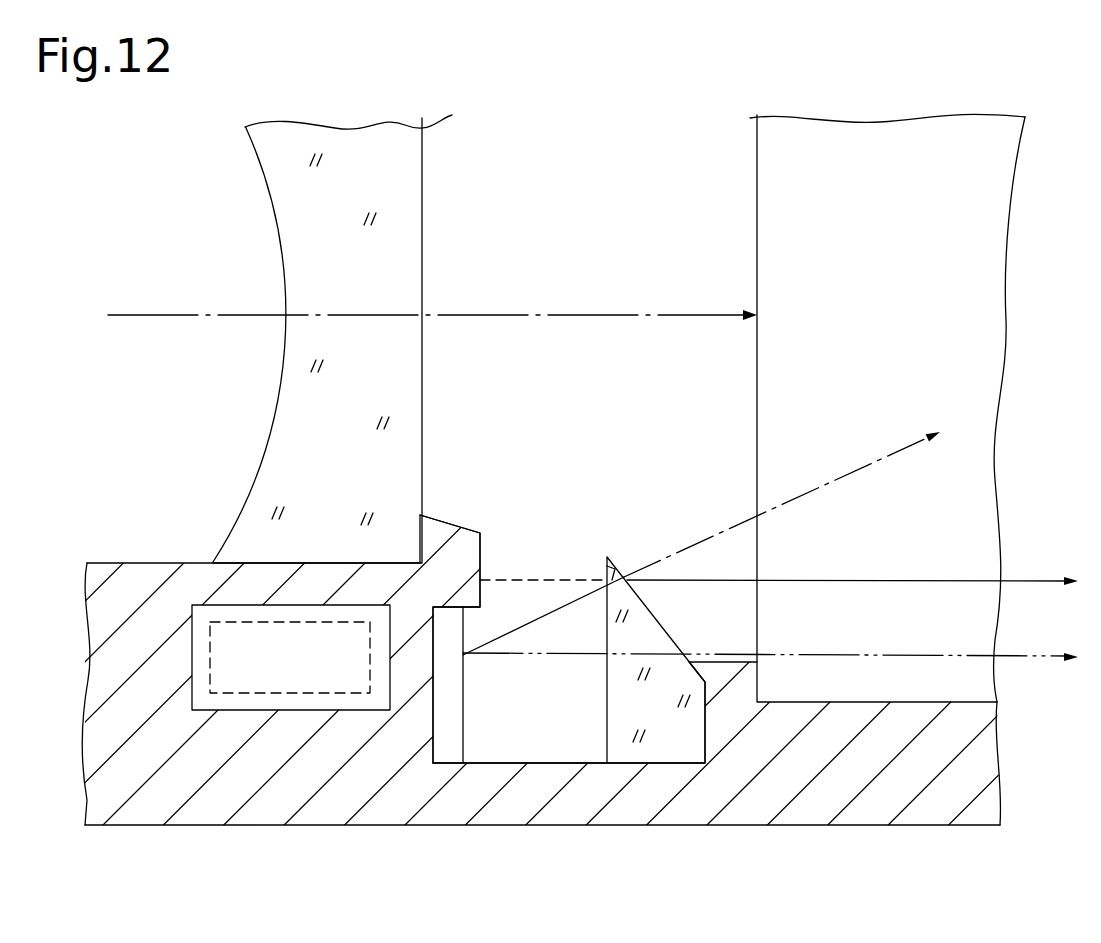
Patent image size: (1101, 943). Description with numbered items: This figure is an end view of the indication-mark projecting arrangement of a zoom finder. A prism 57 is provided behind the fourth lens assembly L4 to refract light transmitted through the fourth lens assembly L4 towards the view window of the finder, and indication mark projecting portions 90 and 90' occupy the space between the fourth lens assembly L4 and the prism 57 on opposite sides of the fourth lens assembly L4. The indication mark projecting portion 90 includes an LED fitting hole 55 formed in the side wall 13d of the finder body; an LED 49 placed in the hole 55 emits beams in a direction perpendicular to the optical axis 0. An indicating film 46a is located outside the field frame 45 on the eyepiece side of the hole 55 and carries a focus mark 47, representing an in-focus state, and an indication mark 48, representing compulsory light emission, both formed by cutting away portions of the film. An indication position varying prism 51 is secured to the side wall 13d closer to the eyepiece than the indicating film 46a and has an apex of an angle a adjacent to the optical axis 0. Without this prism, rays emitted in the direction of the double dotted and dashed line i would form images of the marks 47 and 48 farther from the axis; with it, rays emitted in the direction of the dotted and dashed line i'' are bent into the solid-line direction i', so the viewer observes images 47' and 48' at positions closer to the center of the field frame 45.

The side wall 13d is at (167, 830).
The indication mark projecting portion 90 is at (542, 876).
The indication mark projecting portion 90' is at (544, 66).
The fourth lens assembly L4 is at (276, 204).
The prism 57 is at (757, 436).
The indication position varying prism 51 is at (660, 750).
The field frame 45 is at (423, 517).
The indicating film 46a is at (453, 731).
The LED 49 is at (317, 673).
The LED fitting hole 55 is at (250, 694).
The focus mark 47 is at (543, 646).
The indication mark 48 is at (543, 646).
The indication mark image 47' is at (547, 535).
The indication mark image 48' is at (547, 535).
The apex angle a is at (622, 574).
The optical axis 0 is at (577, 315).
The light ray direction without prism i is at (770, 674).
The shifted light ray direction i' is at (852, 602).
The bent light ray direction i'' is at (782, 504).